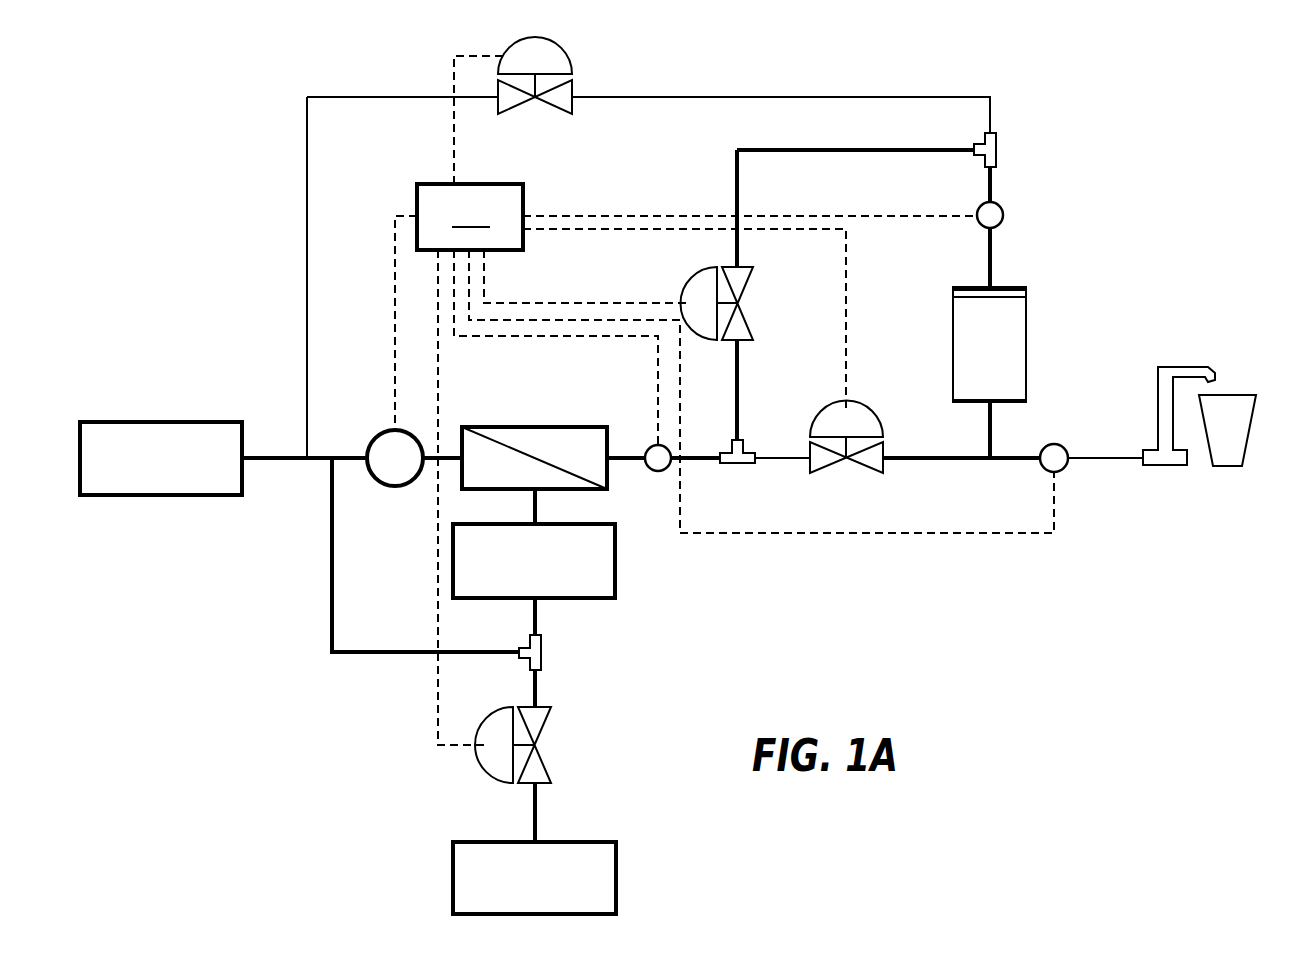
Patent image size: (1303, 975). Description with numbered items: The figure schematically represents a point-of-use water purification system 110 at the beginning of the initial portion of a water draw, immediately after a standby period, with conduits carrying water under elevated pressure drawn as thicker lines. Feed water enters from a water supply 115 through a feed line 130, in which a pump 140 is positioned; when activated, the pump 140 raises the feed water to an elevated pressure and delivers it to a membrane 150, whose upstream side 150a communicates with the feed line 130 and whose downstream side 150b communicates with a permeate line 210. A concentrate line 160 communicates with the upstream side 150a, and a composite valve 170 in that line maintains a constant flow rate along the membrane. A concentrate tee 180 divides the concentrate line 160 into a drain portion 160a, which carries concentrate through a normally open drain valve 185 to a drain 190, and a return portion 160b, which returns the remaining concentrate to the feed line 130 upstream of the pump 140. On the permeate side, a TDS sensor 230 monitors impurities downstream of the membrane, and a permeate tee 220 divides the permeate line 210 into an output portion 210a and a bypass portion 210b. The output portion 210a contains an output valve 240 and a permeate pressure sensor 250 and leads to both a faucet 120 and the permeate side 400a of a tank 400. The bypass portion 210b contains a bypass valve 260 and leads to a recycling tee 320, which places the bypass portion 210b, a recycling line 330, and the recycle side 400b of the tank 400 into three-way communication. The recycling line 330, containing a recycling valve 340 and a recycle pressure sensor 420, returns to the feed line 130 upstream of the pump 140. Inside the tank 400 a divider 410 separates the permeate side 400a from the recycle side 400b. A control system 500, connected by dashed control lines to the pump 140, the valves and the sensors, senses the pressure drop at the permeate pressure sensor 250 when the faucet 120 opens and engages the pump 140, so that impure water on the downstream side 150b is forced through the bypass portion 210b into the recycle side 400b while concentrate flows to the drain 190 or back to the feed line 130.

The point-of-use water purification system 110 is at (196, 129).
The water supply 115 is at (148, 421).
The faucet 120 is at (1195, 365).
The feed line 130 is at (271, 462).
The pump 140 is at (372, 433).
The membrane 150 is at (550, 427).
The upstream side 150a is at (460, 478).
The downstream side 150b is at (610, 440).
The concentrate line 160 is at (538, 615).
The drain portion 160a is at (538, 818).
The return portion 160b is at (392, 655).
The composite valve 170 is at (617, 582).
The concentrate tee 180 is at (543, 655).
The drain valve 185 is at (545, 766).
The drain 190 is at (617, 882).
The permeate line 210 is at (698, 462).
The output portion 210a is at (945, 461).
The bypass portion 210b is at (740, 398).
The permeate tee 220 is at (745, 464).
The TDS sensor 230 is at (651, 472).
The output valve 240 is at (860, 468).
The permeate pressure sensor 250 is at (1061, 447).
The bypass valve 260 is at (750, 282).
The recycling tee 320 is at (998, 143).
The recycling line 330 is at (724, 91).
The recycling valve 340 is at (562, 52).
The tank 400 is at (953, 369).
The permeate side 400a is at (975, 404).
The recycle side 400b is at (1003, 284).
The divider 410 is at (1022, 293).
The recycle pressure sensor 420 is at (1004, 207).
The control system 500 is at (724, 400).